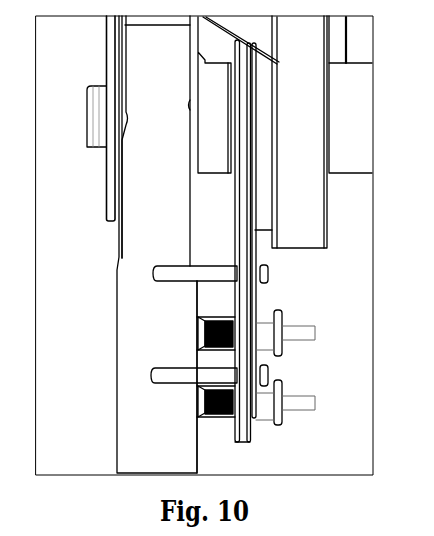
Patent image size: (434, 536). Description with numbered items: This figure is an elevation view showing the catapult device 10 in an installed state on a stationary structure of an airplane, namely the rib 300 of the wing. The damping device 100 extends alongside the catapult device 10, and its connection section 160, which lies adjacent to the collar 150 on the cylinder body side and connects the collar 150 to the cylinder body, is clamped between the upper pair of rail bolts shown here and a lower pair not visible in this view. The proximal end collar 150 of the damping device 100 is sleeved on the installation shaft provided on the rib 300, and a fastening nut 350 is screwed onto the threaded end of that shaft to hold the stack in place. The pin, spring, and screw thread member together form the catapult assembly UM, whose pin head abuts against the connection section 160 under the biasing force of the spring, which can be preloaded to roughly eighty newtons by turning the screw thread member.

The catapult device 10 is at (222, 231).
The damping device 100 is at (109, 331).
The collar 150 is at (182, 126).
The connection section 160 is at (182, 341).
The rib 300 is at (334, 268).
The fastening nut 350 is at (99, 149).
The catapult assembly UM is at (290, 374).